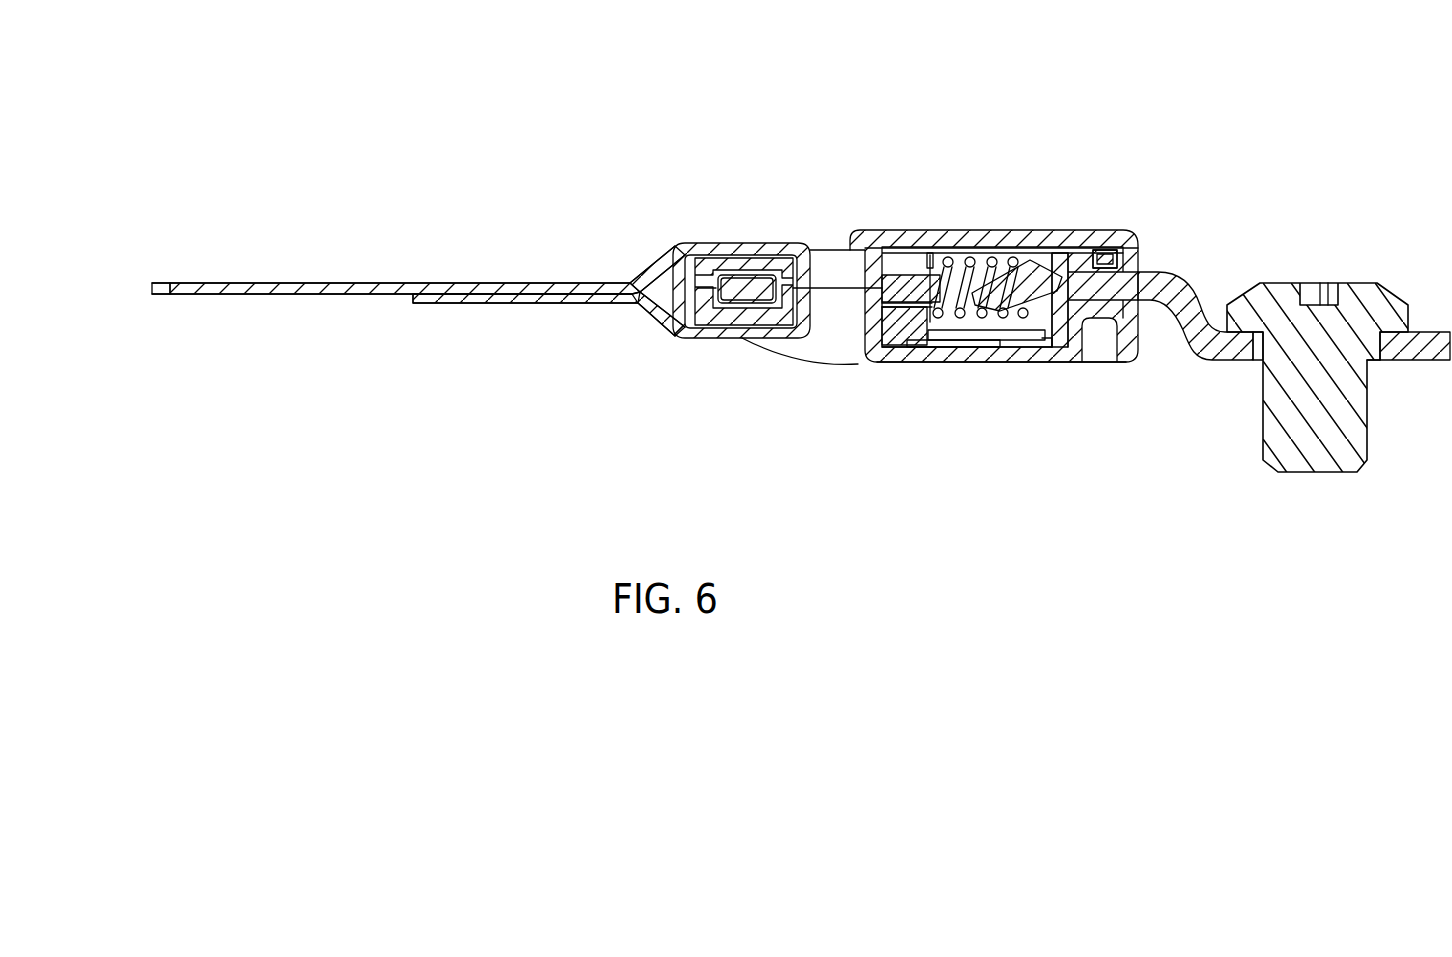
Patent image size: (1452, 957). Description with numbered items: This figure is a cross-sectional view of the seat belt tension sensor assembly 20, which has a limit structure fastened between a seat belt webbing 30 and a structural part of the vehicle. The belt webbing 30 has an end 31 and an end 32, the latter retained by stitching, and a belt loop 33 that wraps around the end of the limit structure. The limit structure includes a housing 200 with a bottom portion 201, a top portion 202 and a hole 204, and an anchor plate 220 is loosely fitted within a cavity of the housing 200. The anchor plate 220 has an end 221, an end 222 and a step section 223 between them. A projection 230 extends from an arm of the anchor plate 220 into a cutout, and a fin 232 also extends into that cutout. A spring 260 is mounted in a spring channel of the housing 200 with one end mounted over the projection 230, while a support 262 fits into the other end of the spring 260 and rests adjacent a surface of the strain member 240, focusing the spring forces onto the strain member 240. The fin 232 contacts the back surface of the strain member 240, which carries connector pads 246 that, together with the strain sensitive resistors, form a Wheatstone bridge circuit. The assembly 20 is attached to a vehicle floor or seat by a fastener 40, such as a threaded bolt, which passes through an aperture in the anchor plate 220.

The seat belt tension sensor assembly 20 is at (383, 135).
The seat belt webbing 30 is at (293, 294).
The end 31 is at (212, 283).
The end 32 is at (533, 300).
The belt loop 33 is at (663, 263).
The end 221 is at (735, 300).
The hole 204 is at (840, 333).
The top portion 202 is at (1130, 242).
The housing 200 is at (905, 366).
The bottom portion 201 is at (957, 366).
The projection 230 is at (882, 265).
The spring 260 is at (945, 255).
The support 262 is at (1038, 255).
The fin 232 is at (1105, 258).
The strain member 240 is at (1075, 347).
The connector pads 246 is at (1012, 343).
The step section 223 is at (1178, 327).
The anchor plate 220 is at (1228, 362).
The end 222 is at (1397, 360).
The fastener 40 is at (1307, 473).